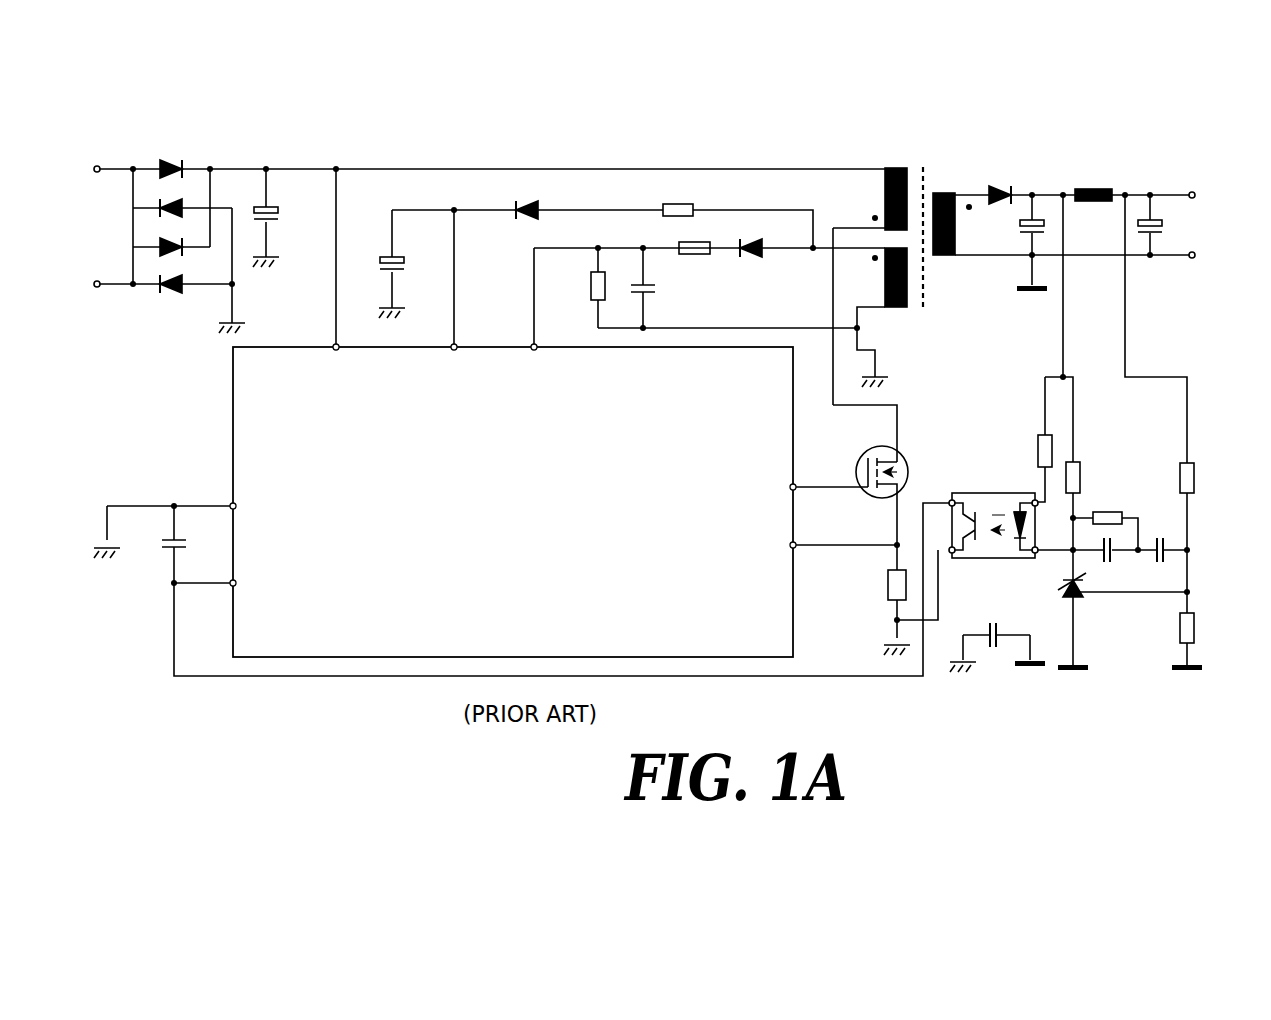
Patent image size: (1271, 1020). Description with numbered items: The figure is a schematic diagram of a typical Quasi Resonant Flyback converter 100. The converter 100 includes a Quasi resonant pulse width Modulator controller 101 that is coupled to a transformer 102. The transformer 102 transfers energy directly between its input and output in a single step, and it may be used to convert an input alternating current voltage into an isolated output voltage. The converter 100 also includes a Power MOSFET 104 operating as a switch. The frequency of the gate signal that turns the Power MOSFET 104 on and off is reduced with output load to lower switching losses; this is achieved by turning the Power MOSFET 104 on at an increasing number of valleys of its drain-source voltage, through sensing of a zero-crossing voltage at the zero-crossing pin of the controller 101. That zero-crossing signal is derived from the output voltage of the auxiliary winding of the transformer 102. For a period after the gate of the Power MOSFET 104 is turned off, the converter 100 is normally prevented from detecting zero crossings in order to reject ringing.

The Quasi Resonant Flyback converter 100 is at (551, 112).
The Quasi resonant pulse width Modulator controller 101 is at (250, 386).
The transformer 102 is at (959, 126).
The Power MOSFET 104 is at (942, 408).